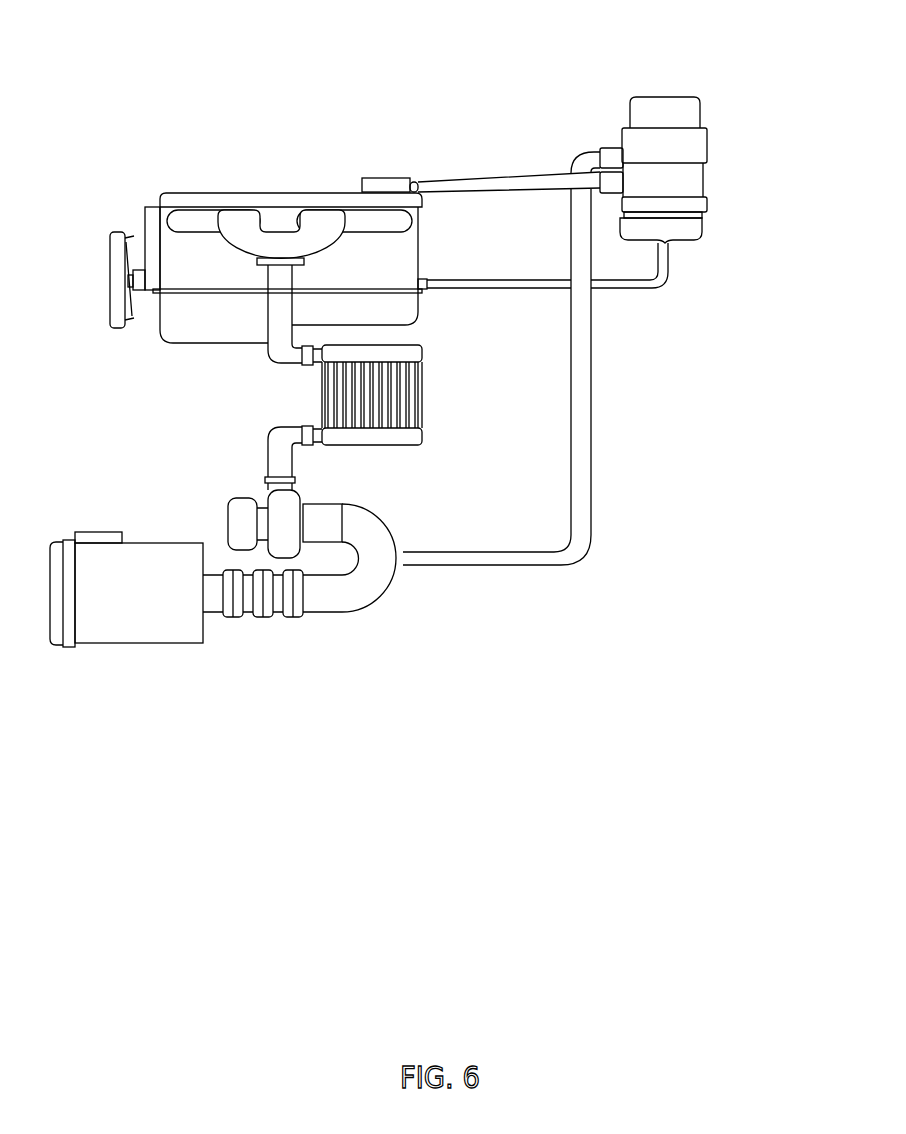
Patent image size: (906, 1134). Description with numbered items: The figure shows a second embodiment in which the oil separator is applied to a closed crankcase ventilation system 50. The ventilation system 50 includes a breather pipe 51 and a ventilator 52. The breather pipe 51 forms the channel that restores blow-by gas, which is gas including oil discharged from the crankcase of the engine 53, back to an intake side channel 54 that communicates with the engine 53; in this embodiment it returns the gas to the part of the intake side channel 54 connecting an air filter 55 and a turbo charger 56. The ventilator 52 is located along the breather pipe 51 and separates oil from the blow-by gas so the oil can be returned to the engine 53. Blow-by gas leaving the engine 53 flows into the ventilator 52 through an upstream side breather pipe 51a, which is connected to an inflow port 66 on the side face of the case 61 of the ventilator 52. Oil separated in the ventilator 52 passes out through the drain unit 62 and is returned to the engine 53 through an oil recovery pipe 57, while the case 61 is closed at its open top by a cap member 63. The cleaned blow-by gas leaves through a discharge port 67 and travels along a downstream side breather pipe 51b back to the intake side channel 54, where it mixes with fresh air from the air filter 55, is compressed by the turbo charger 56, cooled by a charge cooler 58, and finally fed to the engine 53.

The ventilation system 50 is at (280, 148).
The breather pipe 51 is at (555, 97).
The upstream side breather pipe 51a is at (467, 178).
The downstream side breather pipe 51b is at (570, 242).
The ventilator 52 is at (663, 92).
The engine 53 is at (207, 192).
The intake side channel 54 is at (278, 443).
The air filter 55 is at (138, 645).
The turbo charger 56 is at (228, 523).
The oil recovery pipe 57 is at (518, 290).
The charge cooler 58 is at (423, 392).
The case 61 is at (707, 162).
The drain unit 62 is at (688, 240).
The cap member 63 is at (683, 97).
The inflow port 66 is at (613, 195).
The discharge port 67 is at (606, 147).